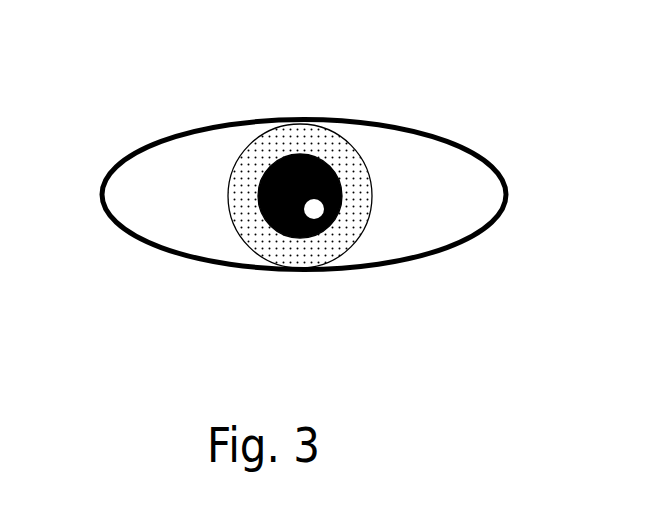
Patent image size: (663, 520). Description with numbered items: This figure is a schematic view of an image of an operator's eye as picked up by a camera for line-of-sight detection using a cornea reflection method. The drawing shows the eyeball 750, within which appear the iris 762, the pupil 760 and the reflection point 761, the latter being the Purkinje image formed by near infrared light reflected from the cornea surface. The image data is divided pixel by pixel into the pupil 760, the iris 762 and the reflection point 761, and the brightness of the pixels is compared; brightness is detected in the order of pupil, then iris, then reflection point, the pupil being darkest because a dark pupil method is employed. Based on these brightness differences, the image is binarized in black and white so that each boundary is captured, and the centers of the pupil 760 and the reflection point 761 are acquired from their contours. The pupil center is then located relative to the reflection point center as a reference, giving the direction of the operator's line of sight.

The eyeball 750 is at (446, 165).
The iris 762 is at (297, 133).
The pupil 760 is at (262, 215).
The reflection point 761 is at (315, 208).